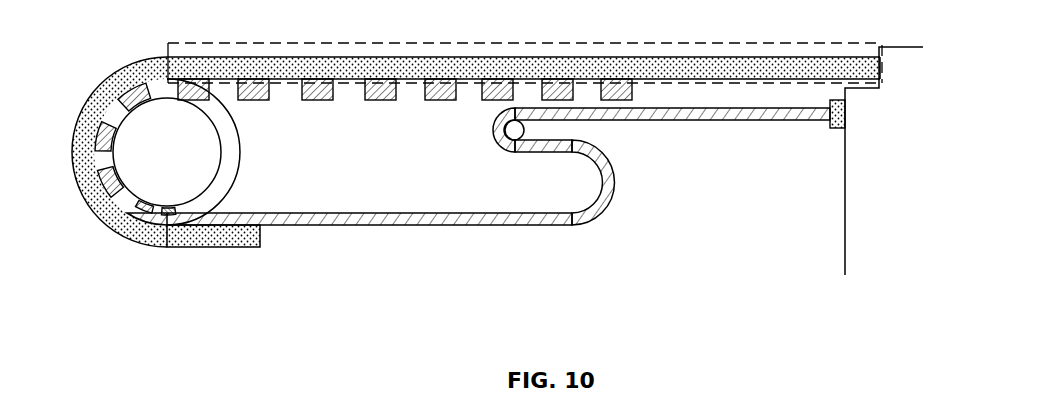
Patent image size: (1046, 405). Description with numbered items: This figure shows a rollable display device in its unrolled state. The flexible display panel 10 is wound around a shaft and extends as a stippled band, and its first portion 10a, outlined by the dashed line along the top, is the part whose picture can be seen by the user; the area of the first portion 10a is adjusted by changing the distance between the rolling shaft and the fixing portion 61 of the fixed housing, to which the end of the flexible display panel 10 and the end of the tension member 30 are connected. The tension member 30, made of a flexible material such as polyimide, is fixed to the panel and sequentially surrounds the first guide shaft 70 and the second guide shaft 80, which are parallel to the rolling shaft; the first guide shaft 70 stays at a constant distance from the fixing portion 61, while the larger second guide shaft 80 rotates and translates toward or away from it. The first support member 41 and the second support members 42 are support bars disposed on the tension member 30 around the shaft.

The flexible display panel 10 is at (95, 193).
The first portion 10a is at (580, 45).
The tension member 30 is at (298, 222).
The first support member 41 is at (172, 210).
The second support member 42 is at (112, 193).
The fixing portion 61 is at (898, 47).
The first guide shaft 70 is at (512, 132).
The second guide shaft 80 is at (590, 193).